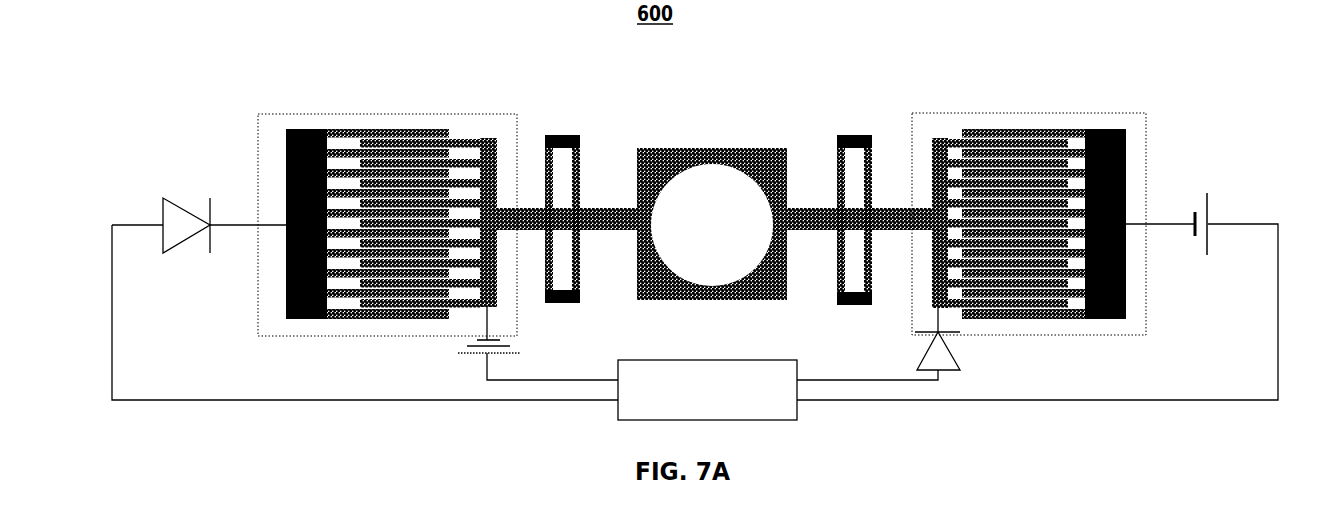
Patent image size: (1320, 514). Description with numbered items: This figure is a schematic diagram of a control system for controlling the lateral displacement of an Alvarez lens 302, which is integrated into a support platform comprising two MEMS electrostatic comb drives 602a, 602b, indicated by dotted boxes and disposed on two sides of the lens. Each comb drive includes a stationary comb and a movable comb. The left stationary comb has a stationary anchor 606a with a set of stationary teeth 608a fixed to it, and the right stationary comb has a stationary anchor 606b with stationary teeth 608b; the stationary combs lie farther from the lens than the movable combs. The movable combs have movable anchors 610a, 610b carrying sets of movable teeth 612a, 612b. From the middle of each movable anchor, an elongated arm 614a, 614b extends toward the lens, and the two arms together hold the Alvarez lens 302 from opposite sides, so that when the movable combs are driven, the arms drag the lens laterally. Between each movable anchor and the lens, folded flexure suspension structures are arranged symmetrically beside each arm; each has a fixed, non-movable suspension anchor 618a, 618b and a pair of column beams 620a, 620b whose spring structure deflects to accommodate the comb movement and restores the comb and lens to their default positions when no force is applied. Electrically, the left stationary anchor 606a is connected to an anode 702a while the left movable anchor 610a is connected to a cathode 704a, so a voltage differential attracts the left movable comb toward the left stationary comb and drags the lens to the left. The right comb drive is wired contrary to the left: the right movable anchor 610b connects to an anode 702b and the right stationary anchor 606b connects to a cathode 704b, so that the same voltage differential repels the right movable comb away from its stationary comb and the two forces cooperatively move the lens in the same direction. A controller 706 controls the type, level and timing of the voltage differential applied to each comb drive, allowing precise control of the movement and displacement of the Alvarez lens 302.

The Alvarez lens 302 is at (713, 182).
The left comb drive 602a is at (258, 192).
The right comb drive 602b is at (1145, 197).
The left stationary anchor 606a is at (307, 128).
The right stationary anchor 606b is at (1103, 128).
The stationary teeth 608a is at (375, 128).
The stationary teeth 608b is at (1027, 131).
The left movable anchor 610a is at (490, 138).
The right movable anchor 610b is at (940, 143).
The movable teeth 612a is at (442, 140).
The movable teeth 612b is at (977, 142).
The elongated arm 614a is at (523, 232).
The elongated arm 614b is at (897, 227).
The suspension anchor 618a is at (591, 191).
The suspension anchor 618b is at (822, 198).
The column beams 620a is at (573, 167).
The column beams 620b is at (840, 160).
The anode 702a is at (163, 198).
The anode 702b is at (960, 370).
The cathode 704a is at (470, 352).
The cathode 704b is at (1208, 212).
The controller 706 is at (707, 390).